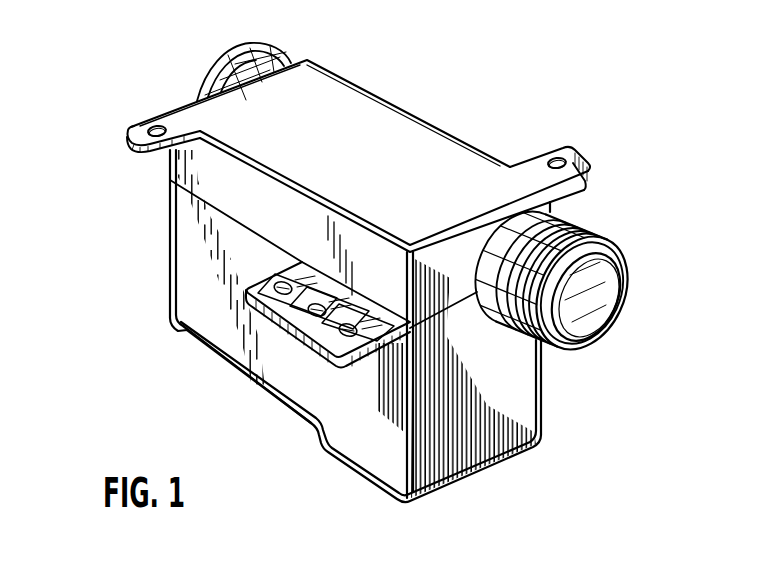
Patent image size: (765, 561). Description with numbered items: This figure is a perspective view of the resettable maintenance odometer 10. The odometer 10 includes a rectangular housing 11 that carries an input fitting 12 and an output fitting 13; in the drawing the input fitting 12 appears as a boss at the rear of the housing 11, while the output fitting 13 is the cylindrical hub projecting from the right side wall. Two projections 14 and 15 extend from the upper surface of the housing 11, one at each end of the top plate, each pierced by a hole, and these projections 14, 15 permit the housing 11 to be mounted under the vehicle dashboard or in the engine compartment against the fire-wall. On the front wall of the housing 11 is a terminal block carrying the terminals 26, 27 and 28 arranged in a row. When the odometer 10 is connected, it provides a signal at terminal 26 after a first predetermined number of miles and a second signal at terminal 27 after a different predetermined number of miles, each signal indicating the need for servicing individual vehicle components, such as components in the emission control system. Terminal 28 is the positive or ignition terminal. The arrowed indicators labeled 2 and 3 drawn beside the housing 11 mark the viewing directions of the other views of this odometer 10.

The resettable maintenance odometer 10 is at (472, 127).
The rectangular housing 11 is at (363, 133).
The input fitting 12 is at (260, 47).
The output fitting 13 is at (573, 230).
The projection 14 is at (170, 128).
The projection 15 is at (550, 155).
The terminal 26 is at (262, 268).
The terminal 27 is at (332, 350).
The positive or ignition terminal 28 is at (322, 326).
The section view 2 direction indicator 2 is at (107, 78).
The section view 3 direction indicator 3 is at (160, 110).